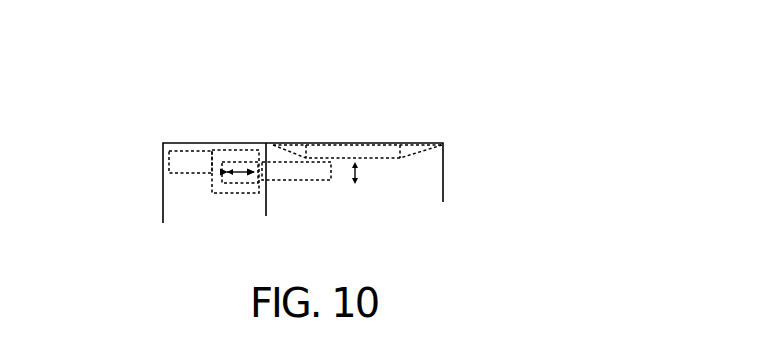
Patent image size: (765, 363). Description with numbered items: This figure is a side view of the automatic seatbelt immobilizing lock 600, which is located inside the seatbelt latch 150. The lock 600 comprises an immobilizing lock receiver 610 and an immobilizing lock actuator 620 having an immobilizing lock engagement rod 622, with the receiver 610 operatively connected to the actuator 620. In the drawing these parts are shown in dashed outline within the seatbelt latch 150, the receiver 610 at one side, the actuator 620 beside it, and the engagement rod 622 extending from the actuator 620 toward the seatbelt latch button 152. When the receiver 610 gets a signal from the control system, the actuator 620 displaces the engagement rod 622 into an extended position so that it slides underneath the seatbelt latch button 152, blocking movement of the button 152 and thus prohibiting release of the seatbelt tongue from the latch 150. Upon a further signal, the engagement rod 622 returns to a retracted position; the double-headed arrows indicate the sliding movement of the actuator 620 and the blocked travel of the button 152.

The seatbelt latch 150 is at (423, 170).
The seatbelt latch button 152 is at (357, 154).
The automatic seatbelt immobilizing lock 600 is at (497, 100).
The immobilizing lock receiver 610 is at (182, 163).
The immobilizing lock actuator 620 is at (236, 168).
The immobilizing lock engagement rod 622 is at (286, 170).